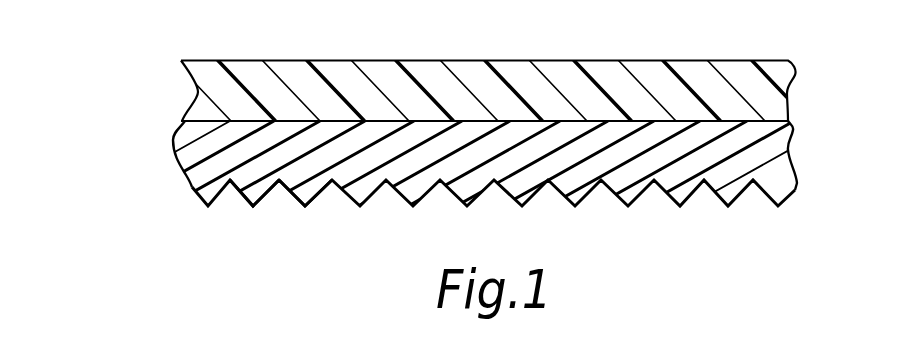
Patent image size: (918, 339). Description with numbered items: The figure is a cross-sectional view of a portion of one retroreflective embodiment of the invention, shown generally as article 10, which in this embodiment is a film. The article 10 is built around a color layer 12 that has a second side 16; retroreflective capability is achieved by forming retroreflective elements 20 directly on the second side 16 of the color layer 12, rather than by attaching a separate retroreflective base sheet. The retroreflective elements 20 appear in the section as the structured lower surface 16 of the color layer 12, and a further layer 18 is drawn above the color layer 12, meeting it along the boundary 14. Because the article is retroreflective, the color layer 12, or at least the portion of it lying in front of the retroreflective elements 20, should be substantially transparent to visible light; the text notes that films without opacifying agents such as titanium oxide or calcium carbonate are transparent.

The sheet article 10 is at (135, 162).
The color layer 12 is at (457, 199).
The interface between layers 14 is at (246, 121).
The second side 16 is at (721, 199).
The top layer 18 is at (783, 75).
The retroreflective elements 20 is at (329, 203).